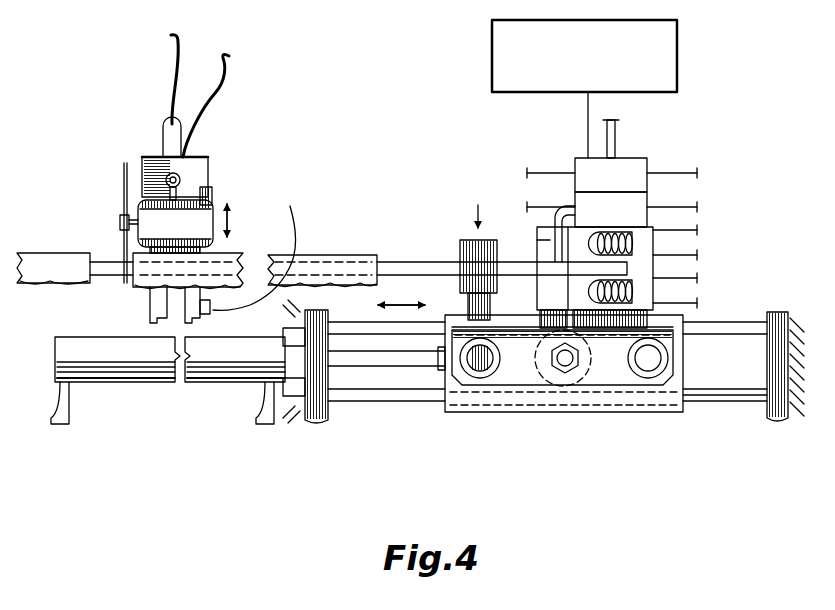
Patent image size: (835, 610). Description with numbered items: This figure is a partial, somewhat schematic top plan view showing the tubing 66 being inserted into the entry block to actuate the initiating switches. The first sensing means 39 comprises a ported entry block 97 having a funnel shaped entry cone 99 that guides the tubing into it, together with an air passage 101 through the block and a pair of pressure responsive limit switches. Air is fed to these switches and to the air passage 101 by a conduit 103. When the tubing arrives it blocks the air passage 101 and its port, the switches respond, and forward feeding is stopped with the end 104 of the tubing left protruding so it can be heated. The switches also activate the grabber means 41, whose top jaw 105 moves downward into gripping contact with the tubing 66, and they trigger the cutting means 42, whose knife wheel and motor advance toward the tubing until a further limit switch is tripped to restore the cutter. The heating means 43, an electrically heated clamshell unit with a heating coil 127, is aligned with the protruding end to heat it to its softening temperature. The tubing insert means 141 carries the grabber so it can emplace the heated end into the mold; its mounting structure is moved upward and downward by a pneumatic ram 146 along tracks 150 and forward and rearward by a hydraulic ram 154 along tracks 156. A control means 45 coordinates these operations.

The cutting means 42 is at (106, 182).
The control means 45 is at (492, 60).
The first sensing means 39 is at (554, 162).
The conduit 103 is at (619, 123).
The heating means 43 is at (716, 236).
The heating coil 127 is at (637, 247).
The air passage 101 is at (565, 210).
The ported entry block 97 is at (549, 245).
The funnel shaped entry cone 99 is at (540, 252).
The end of tubing 104 is at (630, 276).
The tubing 66 is at (398, 260).
The top jaw 105 is at (460, 250).
The grabber means 41 is at (442, 239).
The hydraulic ram 154 is at (190, 383).
The tubing insert means 141 is at (386, 426).
The tracks 150 is at (477, 357).
The pneumatic ram 146 is at (580, 378).
The tracks 156 is at (715, 405).